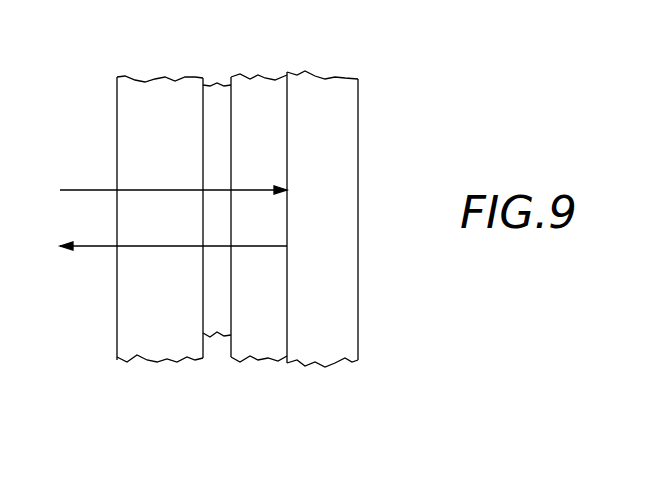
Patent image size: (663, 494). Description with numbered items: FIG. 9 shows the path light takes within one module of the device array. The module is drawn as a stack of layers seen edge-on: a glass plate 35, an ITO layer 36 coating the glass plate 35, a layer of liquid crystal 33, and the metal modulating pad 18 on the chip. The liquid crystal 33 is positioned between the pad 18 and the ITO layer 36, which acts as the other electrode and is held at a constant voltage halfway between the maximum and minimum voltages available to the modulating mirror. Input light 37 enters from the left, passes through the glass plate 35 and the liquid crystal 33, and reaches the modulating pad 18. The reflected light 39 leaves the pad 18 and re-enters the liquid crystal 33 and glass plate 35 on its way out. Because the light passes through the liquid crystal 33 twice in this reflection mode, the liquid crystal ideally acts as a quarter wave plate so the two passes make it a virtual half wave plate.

The modulating pad 18 is at (307, 108).
The liquid crystal 33 is at (255, 102).
The glass plate 35 is at (145, 95).
The ITO layer 36 is at (220, 100).
The input light 37 is at (92, 190).
The reflected light 39 is at (92, 248).